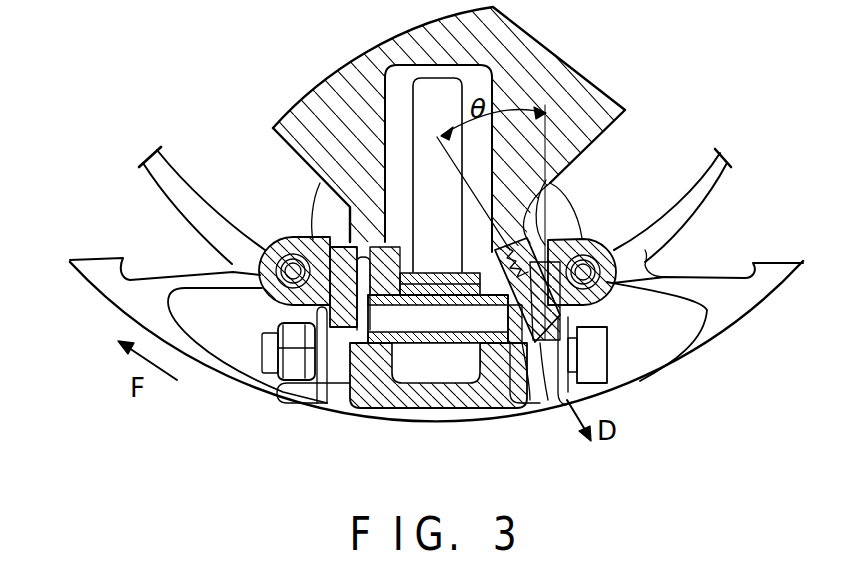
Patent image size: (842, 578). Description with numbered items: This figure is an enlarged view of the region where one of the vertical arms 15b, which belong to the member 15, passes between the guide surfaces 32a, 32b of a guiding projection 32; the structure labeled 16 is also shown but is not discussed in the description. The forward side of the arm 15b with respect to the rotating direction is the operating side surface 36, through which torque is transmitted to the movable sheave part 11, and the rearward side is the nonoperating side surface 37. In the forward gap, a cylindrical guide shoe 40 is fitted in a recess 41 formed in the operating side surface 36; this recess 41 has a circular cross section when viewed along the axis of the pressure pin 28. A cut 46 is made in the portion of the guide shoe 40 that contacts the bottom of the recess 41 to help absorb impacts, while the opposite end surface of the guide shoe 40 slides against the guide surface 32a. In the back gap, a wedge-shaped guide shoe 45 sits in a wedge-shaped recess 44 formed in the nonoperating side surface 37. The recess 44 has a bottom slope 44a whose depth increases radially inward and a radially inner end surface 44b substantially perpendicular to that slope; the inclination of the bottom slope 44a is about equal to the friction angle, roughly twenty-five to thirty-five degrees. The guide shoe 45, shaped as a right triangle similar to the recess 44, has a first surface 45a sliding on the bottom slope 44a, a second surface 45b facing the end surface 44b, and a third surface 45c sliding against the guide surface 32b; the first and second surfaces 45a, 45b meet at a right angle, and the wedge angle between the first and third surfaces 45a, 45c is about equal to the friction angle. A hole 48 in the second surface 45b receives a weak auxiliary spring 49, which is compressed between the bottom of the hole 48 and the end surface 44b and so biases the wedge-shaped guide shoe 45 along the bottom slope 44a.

The movable sheave part 11 is at (118, 294).
The body 15 is at (302, 107).
The arm 15b is at (350, 215).
The slot 16 is at (405, 82).
The pressure pin 28 is at (378, 345).
The guiding projection 32 is at (258, 273).
The guide surface 32a is at (313, 242).
The guide surface 32b is at (566, 243).
The operating side surface 36 is at (362, 345).
The nonoperating side surface 37 is at (558, 390).
The cylindrical guide shoe 40 is at (278, 308).
The recess 41 is at (392, 247).
The recess 44 is at (492, 284).
The bottom slope 44a is at (530, 345).
The radially inner end surface 44b is at (570, 175).
The wedge-shaped guide shoe 45 is at (640, 386).
The first surface 45a is at (538, 395).
The second surface 45b is at (560, 196).
The third surface 45c is at (573, 313).
The cut 46 is at (326, 403).
The hole 48 is at (487, 300).
The auxiliary spring 49 is at (498, 248).